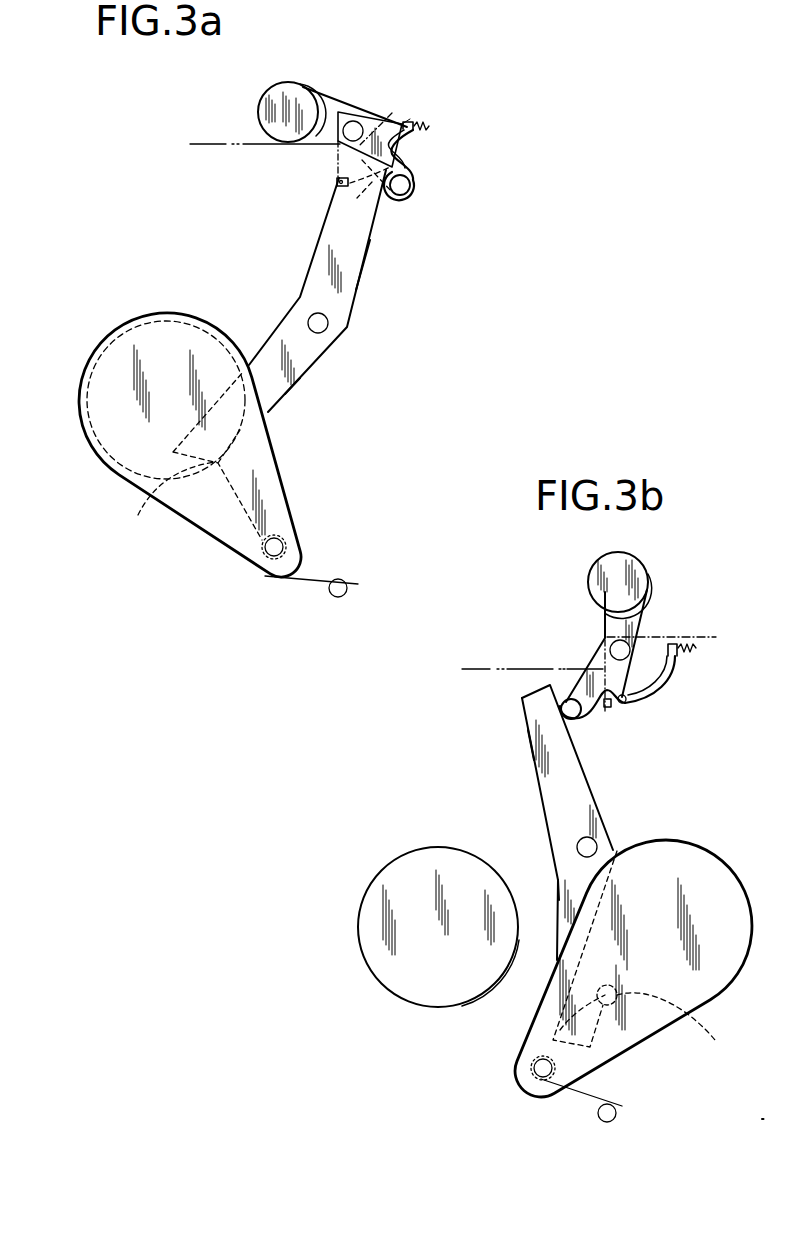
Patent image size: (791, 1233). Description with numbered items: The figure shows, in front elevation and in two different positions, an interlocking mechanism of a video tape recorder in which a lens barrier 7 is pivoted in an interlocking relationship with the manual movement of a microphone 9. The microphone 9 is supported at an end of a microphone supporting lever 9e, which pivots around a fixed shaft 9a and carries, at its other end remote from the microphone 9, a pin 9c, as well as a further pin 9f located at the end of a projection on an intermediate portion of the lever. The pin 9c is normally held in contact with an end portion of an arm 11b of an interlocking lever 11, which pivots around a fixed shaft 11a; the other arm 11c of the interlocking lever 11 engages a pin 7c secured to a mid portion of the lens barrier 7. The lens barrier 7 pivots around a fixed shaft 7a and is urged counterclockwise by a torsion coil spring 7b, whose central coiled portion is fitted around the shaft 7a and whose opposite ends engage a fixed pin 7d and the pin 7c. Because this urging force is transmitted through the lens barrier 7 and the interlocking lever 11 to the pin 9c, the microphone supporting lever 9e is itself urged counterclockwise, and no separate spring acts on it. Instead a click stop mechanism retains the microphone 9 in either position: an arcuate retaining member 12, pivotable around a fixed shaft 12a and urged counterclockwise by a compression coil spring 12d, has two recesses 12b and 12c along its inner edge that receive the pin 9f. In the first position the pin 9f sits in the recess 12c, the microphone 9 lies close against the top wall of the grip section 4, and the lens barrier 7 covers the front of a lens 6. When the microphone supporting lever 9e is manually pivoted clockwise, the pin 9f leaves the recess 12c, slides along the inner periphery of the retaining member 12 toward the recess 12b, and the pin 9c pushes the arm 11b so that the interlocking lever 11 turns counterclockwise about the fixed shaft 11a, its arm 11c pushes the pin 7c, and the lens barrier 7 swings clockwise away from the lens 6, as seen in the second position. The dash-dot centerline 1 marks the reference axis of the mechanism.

In FIG. 3A, the center line 1 is at (393, 112).
In FIG. 3B, the center line 1 is at (660, 636).
In FIG. 3A, the grip section 4 is at (212, 143).
In FIG. 3B, the grip section 4 is at (505, 668).
In FIG. 3A, the lens 6 is at (98, 386).
In FIG. 3B, the lens 6 is at (420, 990).
In FIG. 3A, the lens barrier 7 is at (202, 483).
In FIG. 3B, the lens barrier 7 is at (607, 994).
In FIG. 3A, the fixed shaft 7a is at (272, 558).
In FIG. 3B, the fixed shaft 7a is at (536, 1070).
In FIG. 3A, the torsion coil spring 7b is at (312, 572).
In FIG. 3B, the torsion coil spring 7b is at (582, 1097).
In FIG. 3A, the pin 7c is at (185, 459).
In FIG. 3B, the pin 7c is at (647, 960).
In FIG. 3A, the fixed pin 7d is at (341, 598).
In FIG. 3B, the fixed pin 7d is at (618, 1115).
In FIG. 3A, the microphone 9 is at (292, 84).
In FIG. 3B, the microphone 9 is at (596, 582).
In FIG. 3A, the fixed shaft 9a is at (358, 122).
In FIG. 3B, the fixed shaft 9a is at (612, 648).
In FIG. 3A, the pin 9c is at (409, 194).
In FIG. 3B, the pin 9c is at (560, 712).
In FIG. 3A, the microphone supporting lever 9e is at (326, 100).
In FIG. 3B, the microphone supporting lever 9e is at (606, 646).
In FIG. 3A, the pin 9f is at (412, 125).
In FIG. 3B, the pin 9f is at (630, 700).
In FIG. 3A, the interlocking lever 11 is at (342, 294).
In FIG. 3B, the interlocking lever 11 is at (583, 822).
In FIG. 3A, the fixed shaft 11a is at (326, 330).
In FIG. 3B, the fixed shaft 11a is at (593, 848).
In FIG. 3A, the arm 11b is at (356, 280).
In FIG. 3B, the arm 11b is at (532, 782).
In FIG. 3A, the arm 11c is at (292, 385).
In FIG. 3B, the arm 11c is at (565, 886).
In FIG. 3A, the retaining member 12 is at (377, 178).
In FIG. 3B, the retaining member 12 is at (667, 698).
In FIG. 3A, the fixed shaft 12a is at (336, 183).
In FIG. 3B, the fixed shaft 12a is at (607, 710).
In FIG. 3A, the recess 12b is at (400, 210).
In FIG. 3B, the recess 12b is at (623, 706).
In FIG. 3A, the recess 12c is at (420, 135).
In FIG. 3B, the recess 12c is at (681, 657).
In FIG. 3A, the compression coil spring 12d is at (416, 122).
In FIG. 3B, the compression coil spring 12d is at (686, 644).